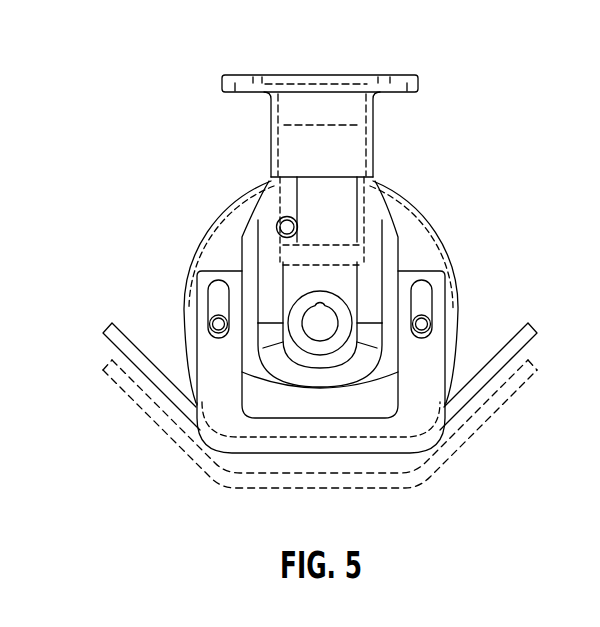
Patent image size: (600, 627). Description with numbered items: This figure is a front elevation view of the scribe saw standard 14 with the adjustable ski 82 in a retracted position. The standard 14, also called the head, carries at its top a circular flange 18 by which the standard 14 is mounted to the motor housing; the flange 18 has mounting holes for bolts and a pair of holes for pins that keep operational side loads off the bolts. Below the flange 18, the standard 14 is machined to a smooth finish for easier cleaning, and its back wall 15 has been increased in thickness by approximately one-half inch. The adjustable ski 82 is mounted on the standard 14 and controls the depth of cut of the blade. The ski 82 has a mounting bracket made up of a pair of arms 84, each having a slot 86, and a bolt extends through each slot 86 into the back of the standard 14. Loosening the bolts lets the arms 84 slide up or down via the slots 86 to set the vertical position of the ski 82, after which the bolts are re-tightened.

The standard 14 is at (271, 141).
The back wall 15 is at (211, 238).
The circular flange 18 is at (221, 82).
The adjustable ski 82 is at (121, 324).
The arms 84 is at (199, 278).
The slot 86 is at (217, 281).